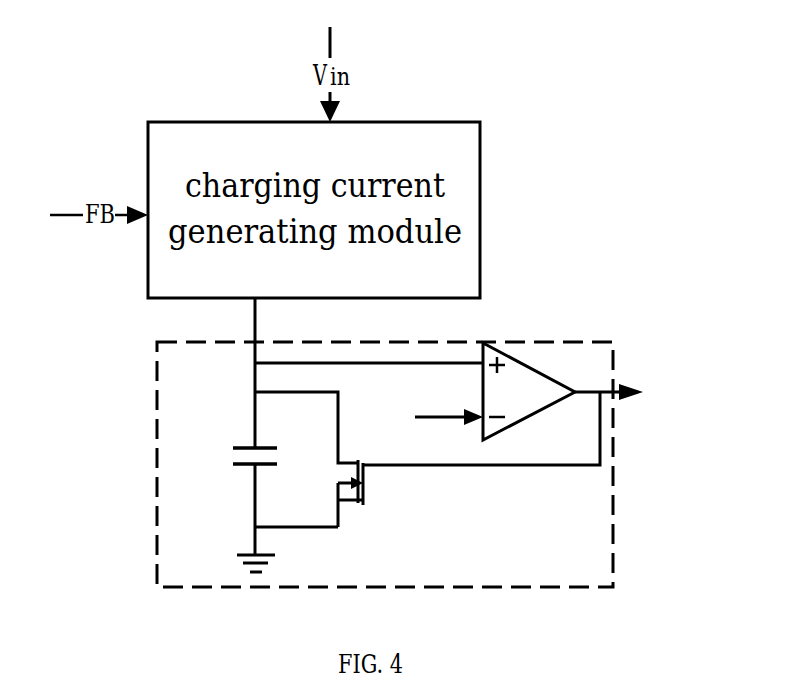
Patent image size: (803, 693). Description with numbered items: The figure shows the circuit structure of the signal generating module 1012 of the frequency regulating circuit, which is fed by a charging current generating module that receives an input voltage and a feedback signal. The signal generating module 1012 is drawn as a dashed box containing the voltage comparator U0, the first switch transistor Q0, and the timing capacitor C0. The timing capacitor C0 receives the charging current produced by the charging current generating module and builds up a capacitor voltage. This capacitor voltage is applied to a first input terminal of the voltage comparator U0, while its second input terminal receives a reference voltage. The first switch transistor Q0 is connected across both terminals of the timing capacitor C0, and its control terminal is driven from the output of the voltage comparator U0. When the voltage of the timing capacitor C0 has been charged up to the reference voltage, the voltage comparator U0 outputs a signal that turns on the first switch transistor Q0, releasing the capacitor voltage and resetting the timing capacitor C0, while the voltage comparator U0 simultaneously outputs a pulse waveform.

The signal generating module 1012 is at (530, 340).
The timing capacitor C0 is at (233, 452).
The first switch transistor Q0 is at (361, 475).
The voltage comparator U0 is at (540, 391).